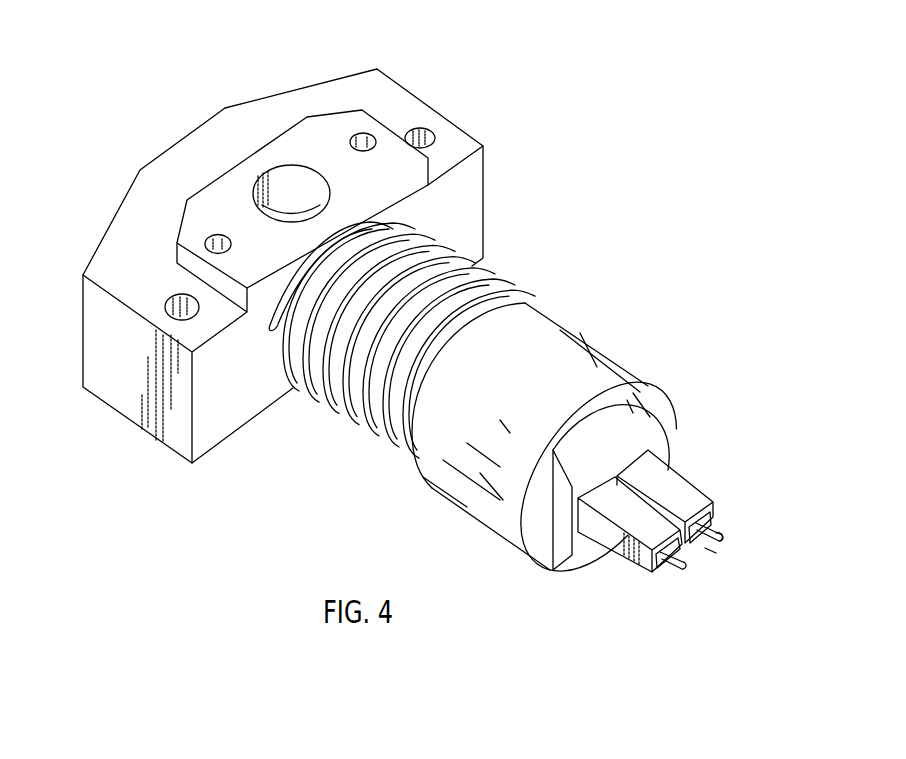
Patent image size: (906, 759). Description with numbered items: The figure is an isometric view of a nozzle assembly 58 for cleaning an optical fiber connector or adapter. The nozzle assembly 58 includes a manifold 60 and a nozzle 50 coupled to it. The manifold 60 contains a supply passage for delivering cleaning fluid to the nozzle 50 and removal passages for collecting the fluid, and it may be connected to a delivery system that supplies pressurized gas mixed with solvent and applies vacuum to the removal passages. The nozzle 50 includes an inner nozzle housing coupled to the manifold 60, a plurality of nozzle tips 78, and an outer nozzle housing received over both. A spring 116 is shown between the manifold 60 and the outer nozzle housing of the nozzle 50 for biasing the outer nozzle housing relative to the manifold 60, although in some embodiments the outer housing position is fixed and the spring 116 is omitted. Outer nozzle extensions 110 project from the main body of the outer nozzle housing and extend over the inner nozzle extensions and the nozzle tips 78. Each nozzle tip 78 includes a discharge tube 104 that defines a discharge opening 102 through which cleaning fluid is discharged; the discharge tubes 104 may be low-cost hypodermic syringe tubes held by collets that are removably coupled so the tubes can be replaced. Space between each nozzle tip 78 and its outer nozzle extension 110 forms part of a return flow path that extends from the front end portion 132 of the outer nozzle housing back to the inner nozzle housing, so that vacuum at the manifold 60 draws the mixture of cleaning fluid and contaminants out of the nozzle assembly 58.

The nozzle assembly 58 is at (661, 146).
The manifold 60 is at (406, 90).
The spring 116 is at (497, 287).
The nozzle 50 is at (642, 380).
The outer nozzle extension 110 is at (692, 480).
The discharge tube 104 is at (720, 527).
The discharge opening 102 is at (718, 539).
The nozzle tip 78 is at (713, 556).
The front end portion 132 is at (663, 572).